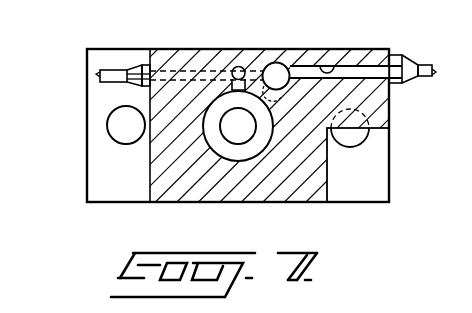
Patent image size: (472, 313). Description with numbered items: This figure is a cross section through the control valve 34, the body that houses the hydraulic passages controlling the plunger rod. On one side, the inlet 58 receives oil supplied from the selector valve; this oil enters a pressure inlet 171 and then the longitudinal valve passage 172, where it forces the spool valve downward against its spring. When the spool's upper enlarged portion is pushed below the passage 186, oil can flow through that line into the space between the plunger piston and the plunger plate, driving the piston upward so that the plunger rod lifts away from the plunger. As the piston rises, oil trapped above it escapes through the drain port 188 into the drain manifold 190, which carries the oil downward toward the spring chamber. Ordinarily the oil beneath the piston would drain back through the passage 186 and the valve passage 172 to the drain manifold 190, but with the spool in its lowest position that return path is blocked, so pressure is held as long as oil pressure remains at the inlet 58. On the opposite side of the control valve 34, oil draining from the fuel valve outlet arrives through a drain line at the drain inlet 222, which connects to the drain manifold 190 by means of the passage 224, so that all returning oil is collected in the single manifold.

The control valve 34 is at (87, 145).
The inlet 58 is at (401, 84).
The pressure inlet 171 is at (345, 49).
The longitudinal valve passage 172 is at (285, 63).
The passage 186 is at (262, 62).
The drain port 188 is at (237, 82).
The drain manifold 190 is at (248, 69).
The drain inlet 222 is at (106, 77).
The passage 224 is at (147, 91).